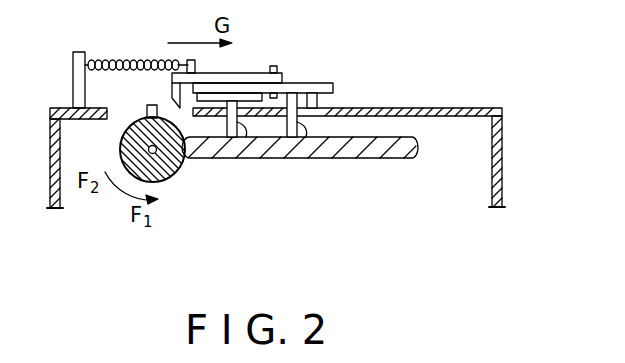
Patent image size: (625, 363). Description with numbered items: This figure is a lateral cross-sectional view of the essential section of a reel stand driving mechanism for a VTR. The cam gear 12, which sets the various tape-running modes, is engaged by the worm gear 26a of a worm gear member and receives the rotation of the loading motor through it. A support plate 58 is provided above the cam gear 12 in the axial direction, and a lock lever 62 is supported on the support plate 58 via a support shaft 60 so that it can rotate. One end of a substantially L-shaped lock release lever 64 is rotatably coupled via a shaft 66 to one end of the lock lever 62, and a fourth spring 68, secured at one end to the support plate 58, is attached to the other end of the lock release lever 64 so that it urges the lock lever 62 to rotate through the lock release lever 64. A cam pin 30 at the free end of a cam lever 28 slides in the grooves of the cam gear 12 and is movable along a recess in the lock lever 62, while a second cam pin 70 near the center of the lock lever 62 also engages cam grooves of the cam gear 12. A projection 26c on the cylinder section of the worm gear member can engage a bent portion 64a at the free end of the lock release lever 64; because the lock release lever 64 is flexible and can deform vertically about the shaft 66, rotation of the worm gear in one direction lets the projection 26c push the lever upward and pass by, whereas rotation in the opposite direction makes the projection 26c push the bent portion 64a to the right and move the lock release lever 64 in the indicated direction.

The cam gear 12 is at (288, 152).
The worm gear 26a is at (174, 162).
The projection 26c is at (148, 107).
The cam lever 28 is at (217, 97).
The cam pin 30 is at (237, 128).
The support plate 58 is at (504, 143).
The support shaft 60 is at (332, 94).
The lock lever 62 is at (333, 81).
The lock release lever 64 is at (262, 74).
The bent portion 64a is at (170, 87).
The shaft 66 is at (278, 64).
The fourth spring 68 is at (116, 60).
The cam pin 70 is at (298, 128).